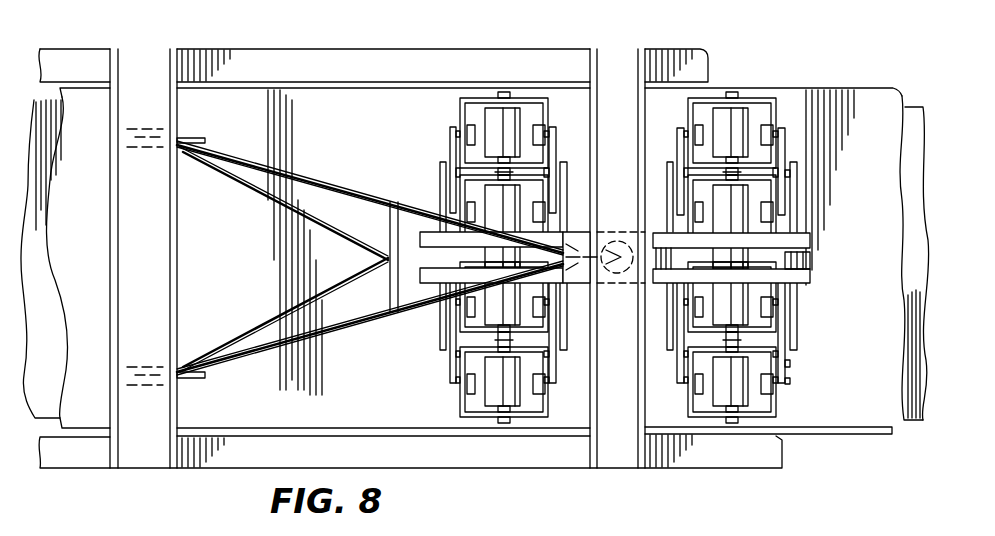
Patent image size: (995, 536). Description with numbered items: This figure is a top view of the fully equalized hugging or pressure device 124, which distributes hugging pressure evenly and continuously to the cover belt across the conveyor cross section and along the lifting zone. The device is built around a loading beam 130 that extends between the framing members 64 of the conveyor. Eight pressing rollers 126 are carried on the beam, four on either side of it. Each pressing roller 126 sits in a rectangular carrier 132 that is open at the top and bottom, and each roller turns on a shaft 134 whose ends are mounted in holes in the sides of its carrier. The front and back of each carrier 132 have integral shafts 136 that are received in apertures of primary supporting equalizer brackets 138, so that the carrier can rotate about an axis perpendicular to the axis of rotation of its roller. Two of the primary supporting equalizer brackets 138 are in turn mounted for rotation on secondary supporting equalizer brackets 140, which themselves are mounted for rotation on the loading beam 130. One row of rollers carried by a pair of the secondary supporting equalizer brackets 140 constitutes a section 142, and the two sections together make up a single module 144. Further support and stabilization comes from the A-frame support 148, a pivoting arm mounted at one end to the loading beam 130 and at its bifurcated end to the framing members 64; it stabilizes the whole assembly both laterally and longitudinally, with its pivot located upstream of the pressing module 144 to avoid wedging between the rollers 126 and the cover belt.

The framing members 64 is at (247, 60).
The fully equalized pressure device 124 is at (668, 37).
The pressing rollers 126 is at (750, 393).
The loading beam 130 is at (800, 238).
The rectangular carriers 132 is at (776, 405).
The shafts 134 is at (503, 423).
The shafts 136 is at (457, 383).
The primary supporting equalizer brackets 138 is at (455, 378).
The secondary supporting equalizer brackets 140 is at (440, 340).
The section 142 is at (528, 428).
The module 144 is at (710, 314).
The A-frame support 148 is at (332, 183).